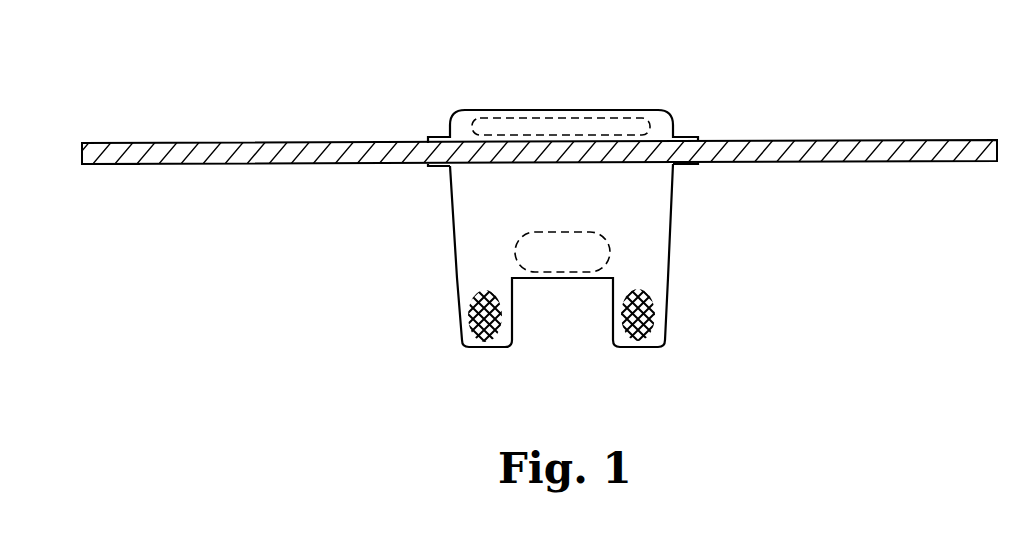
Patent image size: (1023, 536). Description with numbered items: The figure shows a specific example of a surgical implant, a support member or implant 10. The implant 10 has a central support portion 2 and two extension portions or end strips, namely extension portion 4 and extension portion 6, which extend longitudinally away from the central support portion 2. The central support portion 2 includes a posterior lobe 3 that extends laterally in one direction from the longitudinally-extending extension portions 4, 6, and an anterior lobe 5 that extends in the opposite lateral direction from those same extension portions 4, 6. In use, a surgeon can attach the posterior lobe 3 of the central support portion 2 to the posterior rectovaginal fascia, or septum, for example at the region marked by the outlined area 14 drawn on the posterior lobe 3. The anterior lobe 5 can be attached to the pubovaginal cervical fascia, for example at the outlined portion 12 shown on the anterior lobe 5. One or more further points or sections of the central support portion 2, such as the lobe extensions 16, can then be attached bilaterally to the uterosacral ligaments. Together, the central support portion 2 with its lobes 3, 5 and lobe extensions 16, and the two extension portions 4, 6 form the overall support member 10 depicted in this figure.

The support member 10 is at (433, 64).
The outlined portion 12 is at (518, 113).
The anterior lobe 5 is at (683, 99).
The extension portion 4 is at (938, 157).
The extension portion 6 is at (93, 160).
The central support portion 2 is at (545, 205).
The posterior lobe 3 is at (694, 252).
The outlined area 14 is at (530, 255).
The lobe extensions 16 is at (484, 341).